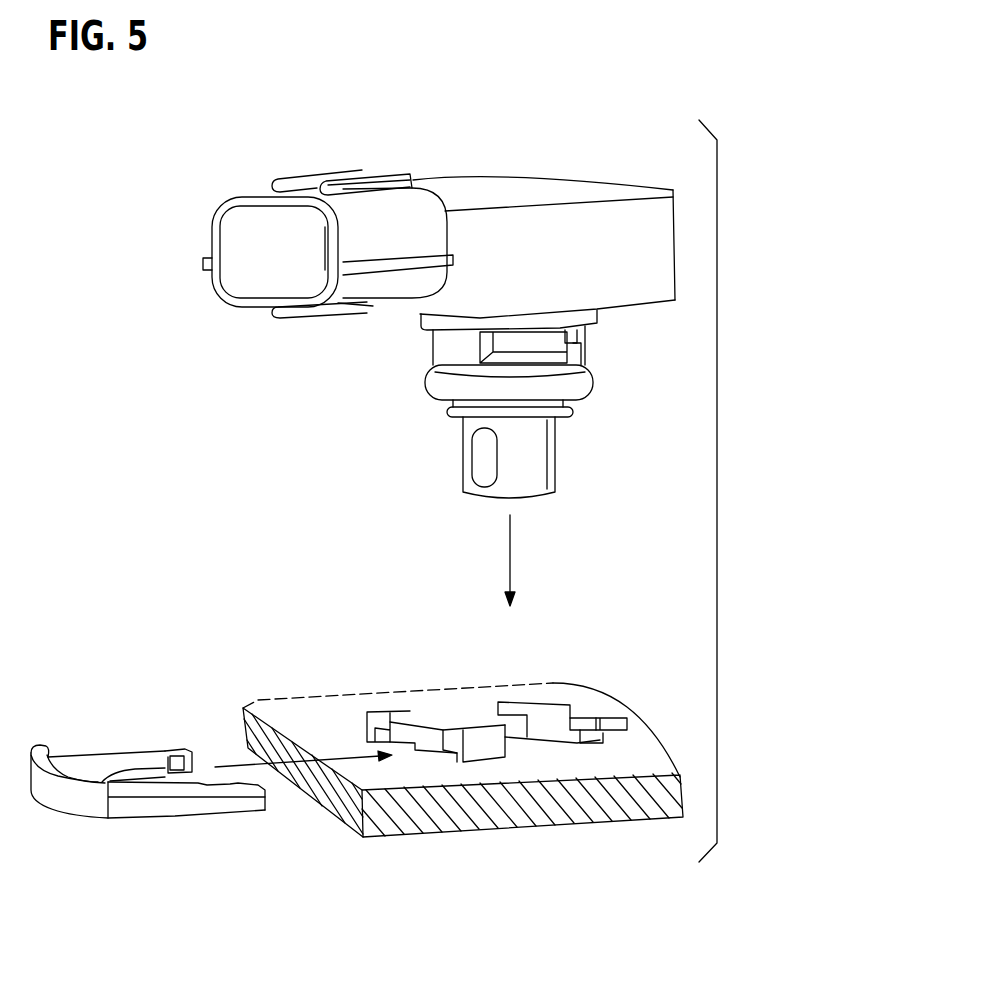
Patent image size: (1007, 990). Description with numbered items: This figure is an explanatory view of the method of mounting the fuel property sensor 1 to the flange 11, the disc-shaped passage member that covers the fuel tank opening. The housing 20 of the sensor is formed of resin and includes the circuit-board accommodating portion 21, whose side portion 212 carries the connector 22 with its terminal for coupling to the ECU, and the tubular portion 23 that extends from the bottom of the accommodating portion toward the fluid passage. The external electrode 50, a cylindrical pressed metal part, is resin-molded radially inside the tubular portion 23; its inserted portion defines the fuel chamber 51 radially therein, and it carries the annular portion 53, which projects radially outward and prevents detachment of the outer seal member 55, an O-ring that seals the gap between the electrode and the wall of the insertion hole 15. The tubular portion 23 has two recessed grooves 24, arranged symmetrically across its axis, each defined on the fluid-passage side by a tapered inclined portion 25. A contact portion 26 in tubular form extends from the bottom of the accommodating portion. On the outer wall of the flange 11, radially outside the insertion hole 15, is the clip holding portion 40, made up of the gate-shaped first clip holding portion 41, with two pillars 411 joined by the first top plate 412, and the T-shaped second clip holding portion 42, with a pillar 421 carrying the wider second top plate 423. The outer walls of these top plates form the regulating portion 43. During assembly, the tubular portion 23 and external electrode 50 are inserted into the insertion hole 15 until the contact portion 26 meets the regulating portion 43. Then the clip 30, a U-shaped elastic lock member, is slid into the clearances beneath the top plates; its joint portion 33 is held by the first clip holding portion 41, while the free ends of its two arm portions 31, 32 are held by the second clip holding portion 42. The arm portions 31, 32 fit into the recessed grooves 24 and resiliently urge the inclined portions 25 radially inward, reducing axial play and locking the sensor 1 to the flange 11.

The fuel property sensor 1 is at (360, 140).
The housing 20 is at (452, 176).
The circuit-board accommodating portion 21 is at (530, 188).
The side portion 212 is at (662, 234).
The connector 22 is at (212, 216).
The tubular portion 23 is at (445, 360).
The recessed groove 24 is at (562, 338).
The inclined portion 25 is at (585, 350).
The contact portion 26 is at (420, 327).
The outer seal member 55 is at (437, 387).
The annular portion 53 is at (455, 416).
The external electrode 50 is at (545, 449).
The fuel chamber 51 is at (475, 463).
The clip holding portion 40 is at (512, 641).
The first clip holding portion 41 is at (421, 726).
The pillar 411 is at (368, 731).
The first top plate 412 is at (388, 716).
The second clip holding portion 42 is at (518, 703).
The pillar 421 is at (605, 735).
The second top plate 423 is at (608, 716).
The regulating portion 43 is at (411, 720).
The flange 11 is at (277, 703).
The insertion hole 15 is at (540, 746).
The clip 30 is at (78, 802).
The arm portion 31 is at (210, 808).
The arm portion 32 is at (128, 758).
The joint portion 33 is at (78, 766).